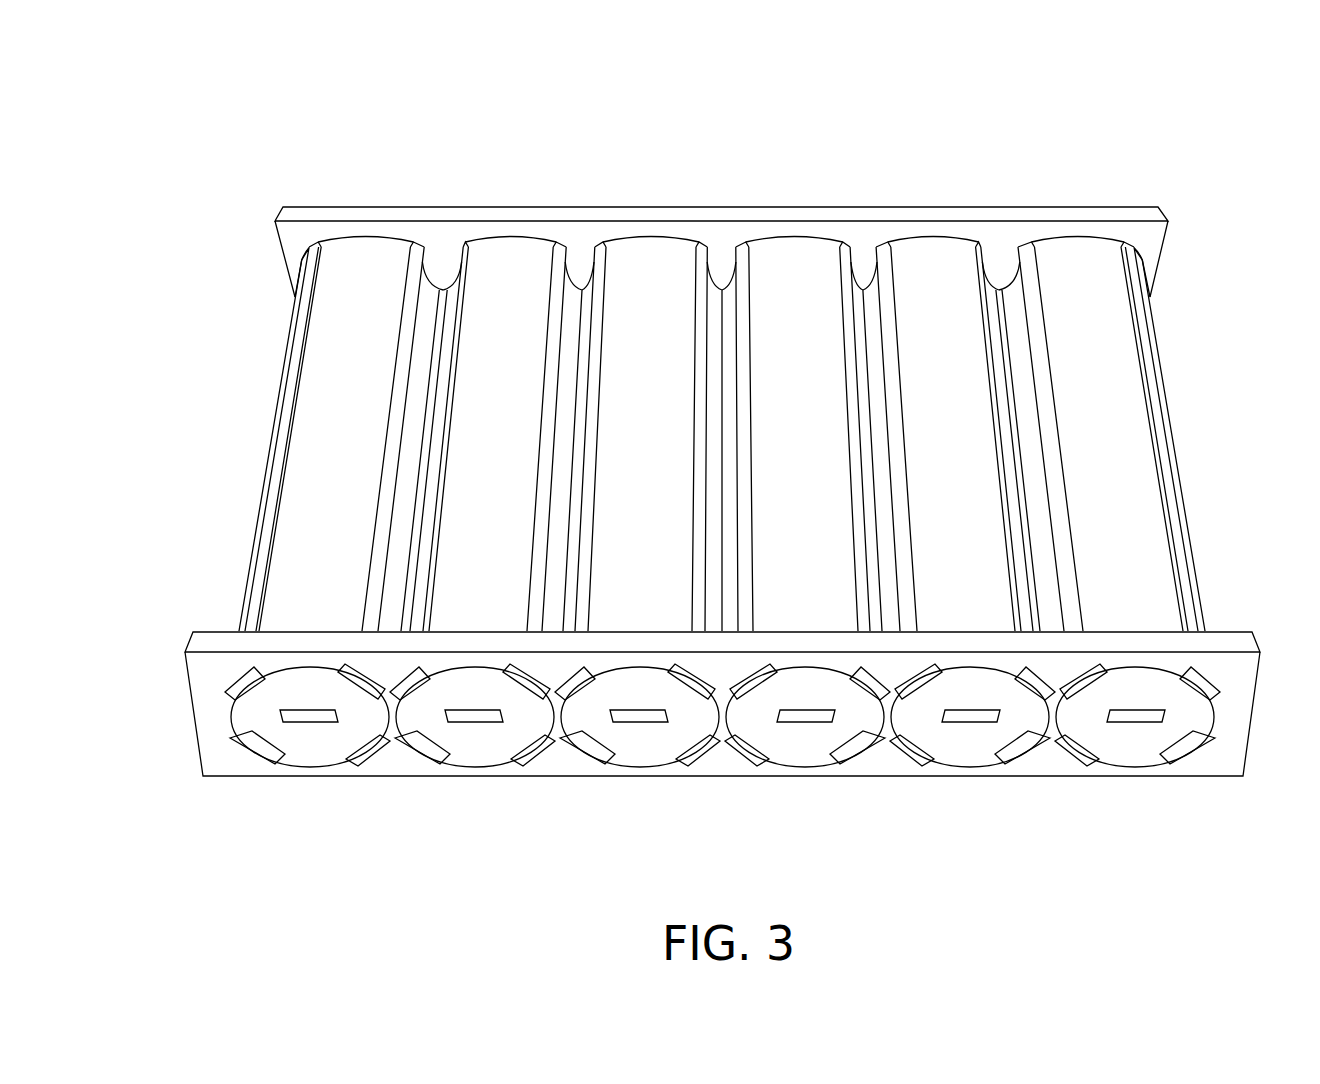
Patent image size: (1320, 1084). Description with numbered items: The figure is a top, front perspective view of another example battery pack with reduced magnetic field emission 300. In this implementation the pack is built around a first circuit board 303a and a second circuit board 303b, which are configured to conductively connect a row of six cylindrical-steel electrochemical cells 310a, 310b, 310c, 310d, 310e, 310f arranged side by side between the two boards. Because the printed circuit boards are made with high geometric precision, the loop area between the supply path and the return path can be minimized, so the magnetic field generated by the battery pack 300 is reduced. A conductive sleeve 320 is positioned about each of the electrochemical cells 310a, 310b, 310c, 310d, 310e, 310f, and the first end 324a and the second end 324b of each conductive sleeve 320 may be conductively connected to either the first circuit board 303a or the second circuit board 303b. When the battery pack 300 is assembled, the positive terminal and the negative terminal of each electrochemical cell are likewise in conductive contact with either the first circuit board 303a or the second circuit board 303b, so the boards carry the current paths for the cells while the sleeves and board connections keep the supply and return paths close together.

The battery pack with reduced magnetic field emission 300 is at (701, 456).
The first circuit board 303a is at (225, 758).
The second circuit board 303b is at (298, 212).
The cylindrical-steel electrochemical cell 310a is at (369, 262).
The cylindrical-steel electrochemical cell 310b is at (508, 262).
The cylindrical-steel electrochemical cell 310c is at (651, 262).
The cylindrical-steel electrochemical cell 310d is at (795, 262).
The cylindrical-steel electrochemical cell 310e is at (940, 262).
The cylindrical-steel electrochemical cell 310f is at (1084, 262).
The conductive sleeve 320 is at (390, 470).
The first end 324a is at (588, 750).
The second end 324b is at (265, 756).